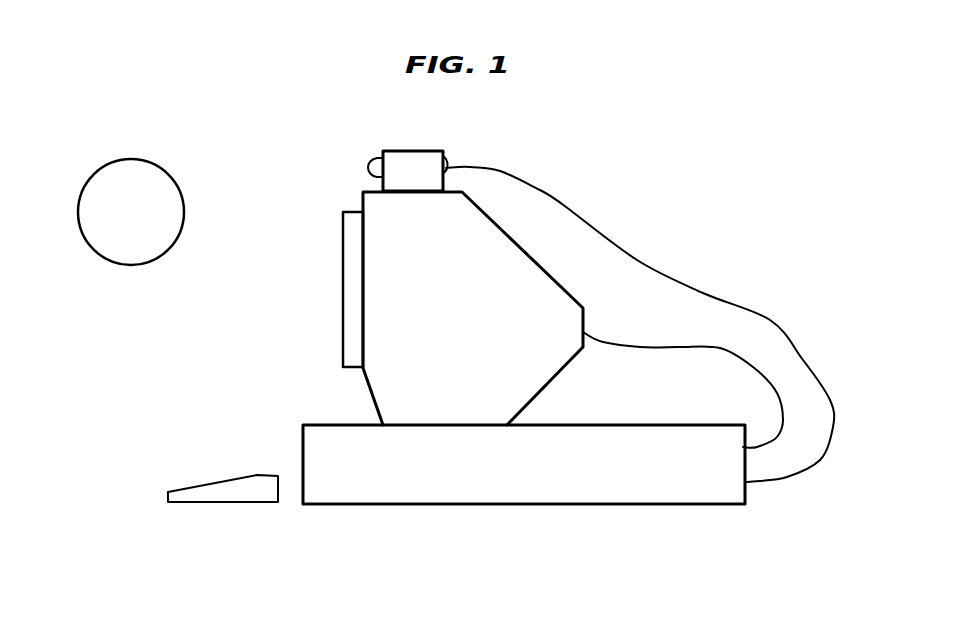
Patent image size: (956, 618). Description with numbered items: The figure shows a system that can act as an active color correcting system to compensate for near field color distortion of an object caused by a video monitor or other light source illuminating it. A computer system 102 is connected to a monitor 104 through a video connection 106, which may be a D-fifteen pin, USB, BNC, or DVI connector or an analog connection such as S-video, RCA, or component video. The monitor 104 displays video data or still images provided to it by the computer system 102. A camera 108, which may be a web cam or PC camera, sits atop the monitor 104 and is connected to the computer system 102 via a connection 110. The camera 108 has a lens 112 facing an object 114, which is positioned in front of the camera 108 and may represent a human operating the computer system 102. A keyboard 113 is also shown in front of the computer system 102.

The computer system 102 is at (637, 505).
The monitor 104 is at (342, 348).
The video connection 106 is at (595, 337).
The camera 108 is at (444, 163).
The connection 110 is at (785, 328).
The lens 112 is at (368, 166).
The keyboard 113 is at (197, 487).
The object 114 is at (127, 170).